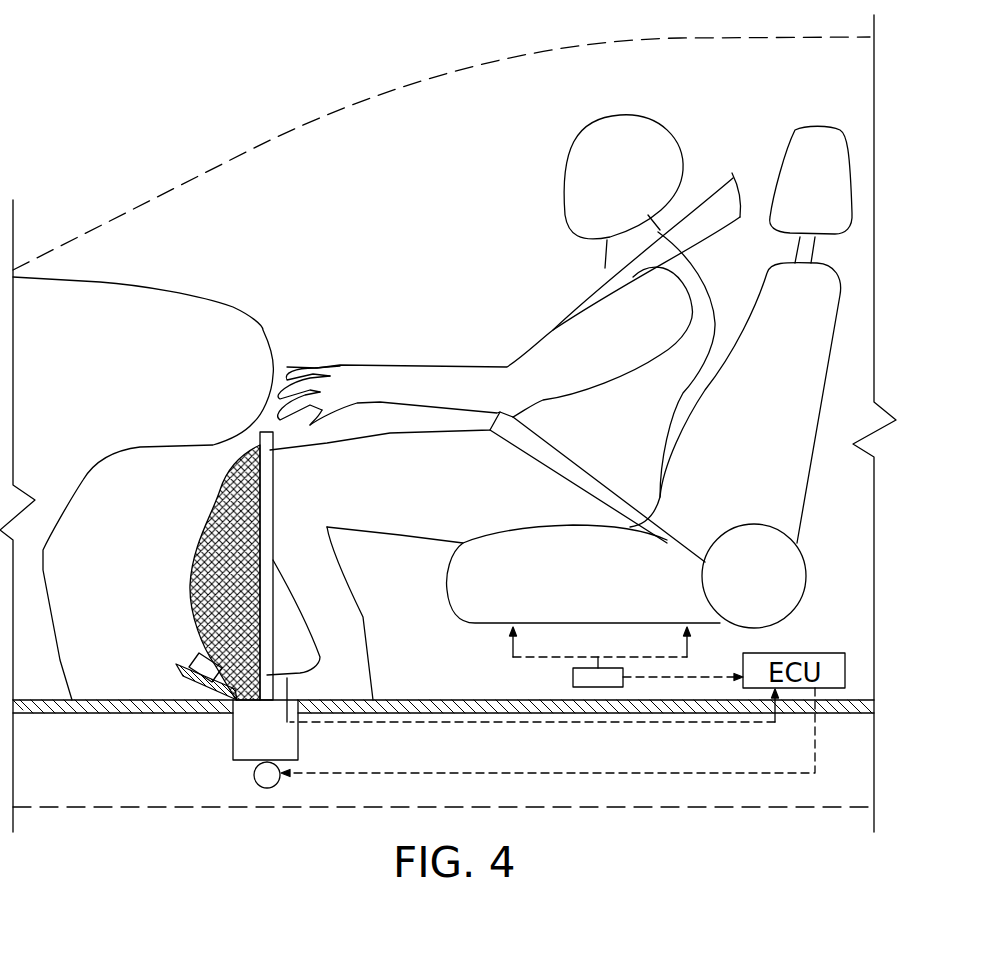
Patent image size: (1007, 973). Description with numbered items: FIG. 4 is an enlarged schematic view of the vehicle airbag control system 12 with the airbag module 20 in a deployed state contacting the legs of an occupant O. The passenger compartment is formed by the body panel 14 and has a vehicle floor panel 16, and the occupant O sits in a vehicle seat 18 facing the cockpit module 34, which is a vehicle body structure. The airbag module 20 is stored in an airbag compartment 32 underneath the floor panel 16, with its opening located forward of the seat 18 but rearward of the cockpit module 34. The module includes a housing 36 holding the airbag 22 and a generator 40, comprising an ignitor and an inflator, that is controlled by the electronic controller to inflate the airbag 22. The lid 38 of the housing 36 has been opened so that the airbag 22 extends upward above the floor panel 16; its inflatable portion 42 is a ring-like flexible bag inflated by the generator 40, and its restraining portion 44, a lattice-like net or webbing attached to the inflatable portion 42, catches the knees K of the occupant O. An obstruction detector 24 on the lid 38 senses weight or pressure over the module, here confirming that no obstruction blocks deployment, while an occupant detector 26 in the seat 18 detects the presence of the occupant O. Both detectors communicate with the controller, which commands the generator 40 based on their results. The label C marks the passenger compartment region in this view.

The vehicle airbag control system 12 is at (165, 96).
The body panel 14 is at (542, 45).
The vehicle floor panel 16 is at (460, 700).
The vehicle seat 18 is at (850, 155).
The airbag module 20 is at (125, 755).
The airbag 22 is at (214, 541).
The obstruction detector 24 is at (207, 658).
The occupant detector 26 is at (573, 677).
The airbag compartment 32 is at (214, 776).
The cockpit module 34 is at (177, 293).
The housing 36 is at (233, 743).
The lid 38 is at (220, 683).
The generator 40 is at (268, 789).
The inflatable portion 42 is at (272, 470).
The restraining portion 44 is at (190, 563).
The cabin C is at (372, 162).
The occupant O is at (449, 383).
The knees K is at (217, 493).